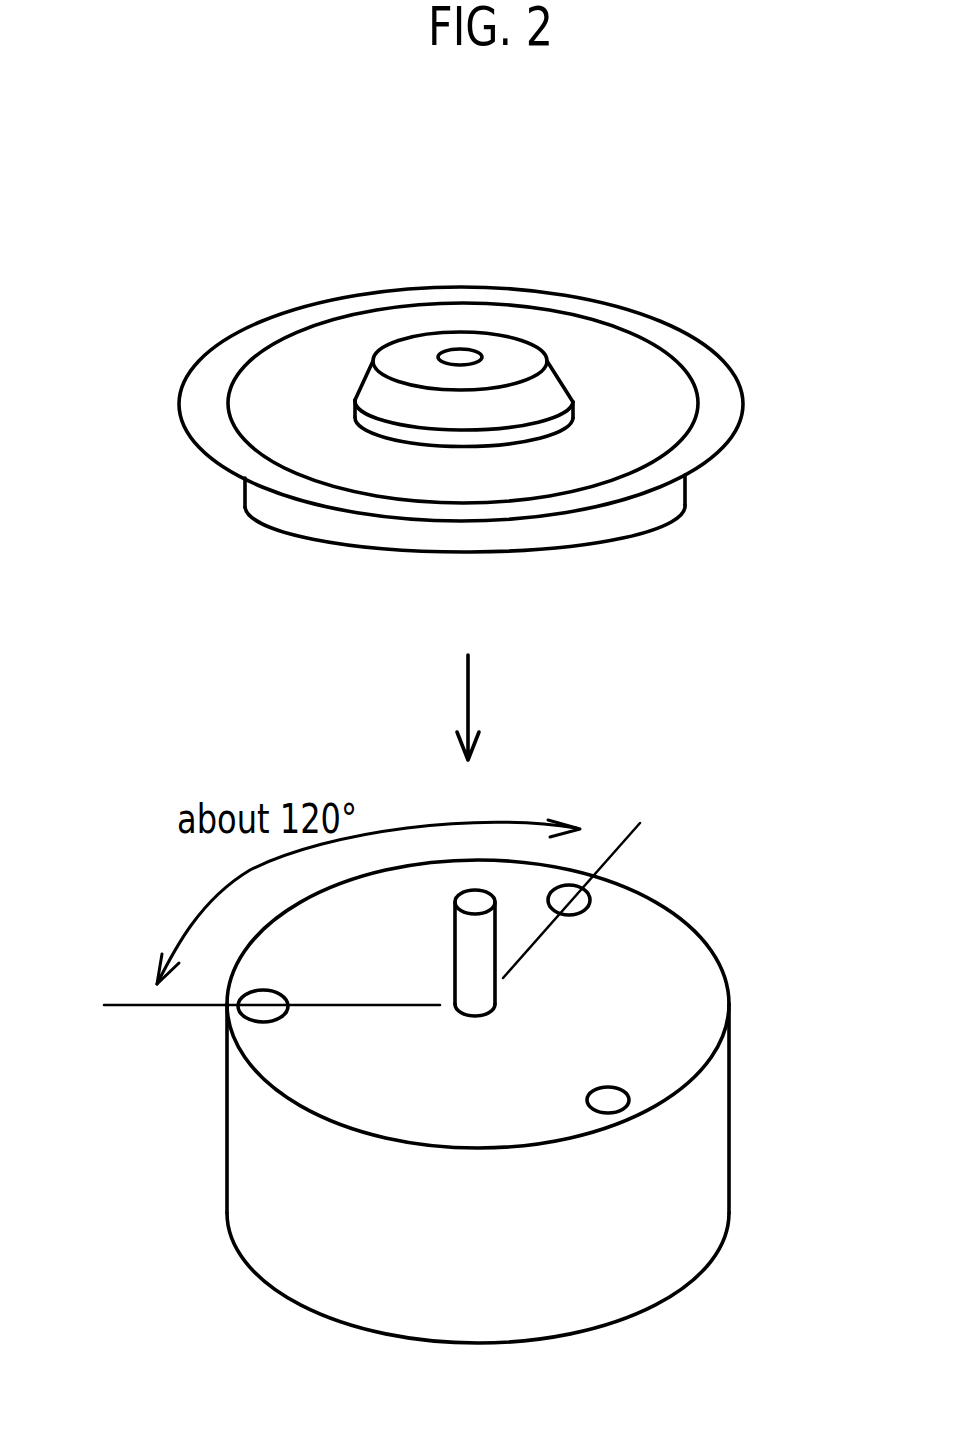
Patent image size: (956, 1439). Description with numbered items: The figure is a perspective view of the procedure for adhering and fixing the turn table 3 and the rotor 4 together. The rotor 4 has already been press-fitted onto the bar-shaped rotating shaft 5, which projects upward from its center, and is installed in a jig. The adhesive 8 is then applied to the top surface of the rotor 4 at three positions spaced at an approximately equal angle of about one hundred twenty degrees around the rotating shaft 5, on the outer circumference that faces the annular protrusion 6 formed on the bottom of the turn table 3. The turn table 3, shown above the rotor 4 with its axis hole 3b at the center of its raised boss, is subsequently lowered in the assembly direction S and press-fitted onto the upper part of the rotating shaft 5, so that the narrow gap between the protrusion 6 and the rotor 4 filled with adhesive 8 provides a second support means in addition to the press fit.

The turn table 3 is at (733, 403).
The axis hole 3b is at (462, 352).
The annular protrusion 6 is at (568, 547).
The rotor 4 is at (713, 991).
The rotating shaft 5 is at (498, 971).
The adhesive 8 is at (238, 1012).
The assembly direction S is at (667, 737).